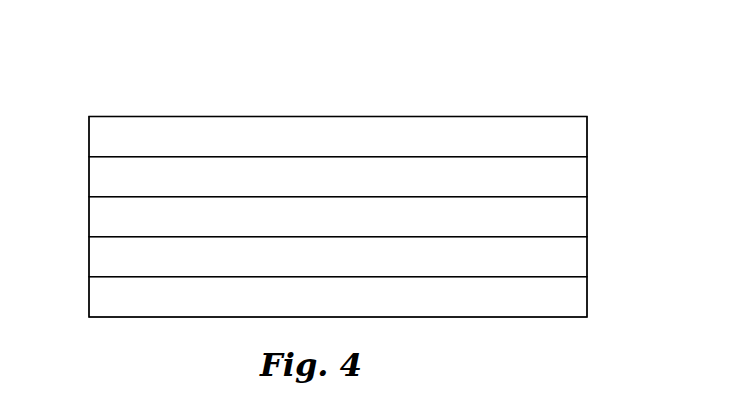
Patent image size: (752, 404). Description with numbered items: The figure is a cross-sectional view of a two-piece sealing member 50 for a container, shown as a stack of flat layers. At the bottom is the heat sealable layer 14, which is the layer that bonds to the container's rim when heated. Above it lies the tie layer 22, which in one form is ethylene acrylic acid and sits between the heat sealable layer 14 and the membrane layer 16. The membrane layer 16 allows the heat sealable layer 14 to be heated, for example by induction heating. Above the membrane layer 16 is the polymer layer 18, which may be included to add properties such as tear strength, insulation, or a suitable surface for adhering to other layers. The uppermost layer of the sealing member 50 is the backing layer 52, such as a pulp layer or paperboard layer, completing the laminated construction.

The sealing member 50 is at (208, 101).
The backing layer 52 is at (89, 137).
The polymer layer 18 is at (587, 178).
The membrane layer 16 is at (587, 218).
The tie layer 22 is at (89, 255).
The heat sealable layer 14 is at (89, 295).